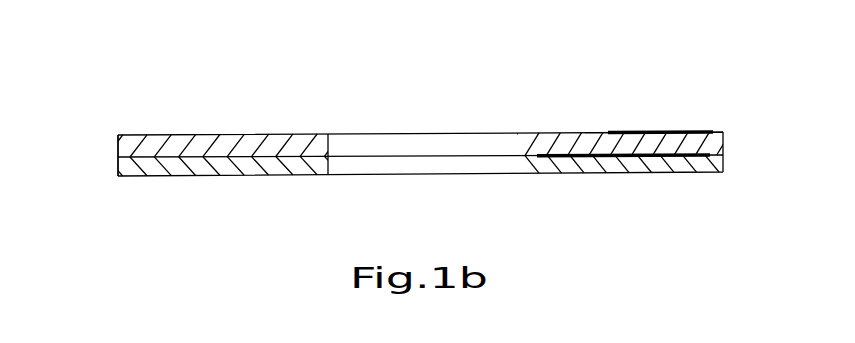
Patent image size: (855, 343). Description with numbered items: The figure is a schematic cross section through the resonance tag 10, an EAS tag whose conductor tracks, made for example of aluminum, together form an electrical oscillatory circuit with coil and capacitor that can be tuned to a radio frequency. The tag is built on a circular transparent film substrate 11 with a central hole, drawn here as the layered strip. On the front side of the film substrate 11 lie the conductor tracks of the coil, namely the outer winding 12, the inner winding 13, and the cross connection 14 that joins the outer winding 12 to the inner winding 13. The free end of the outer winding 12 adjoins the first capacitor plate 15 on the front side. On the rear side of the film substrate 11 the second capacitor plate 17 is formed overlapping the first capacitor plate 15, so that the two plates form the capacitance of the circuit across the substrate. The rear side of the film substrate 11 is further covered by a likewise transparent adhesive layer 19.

The resonance tag 10 is at (444, 99).
The film substrate 11 is at (255, 134).
The outer winding 12 is at (134, 133).
The inner winding 13 is at (314, 131).
The cross connection 14 is at (586, 128).
The first capacitor plate 15 is at (652, 124).
The second capacitor plate 17 is at (635, 162).
The adhesive layer 19 is at (227, 165).